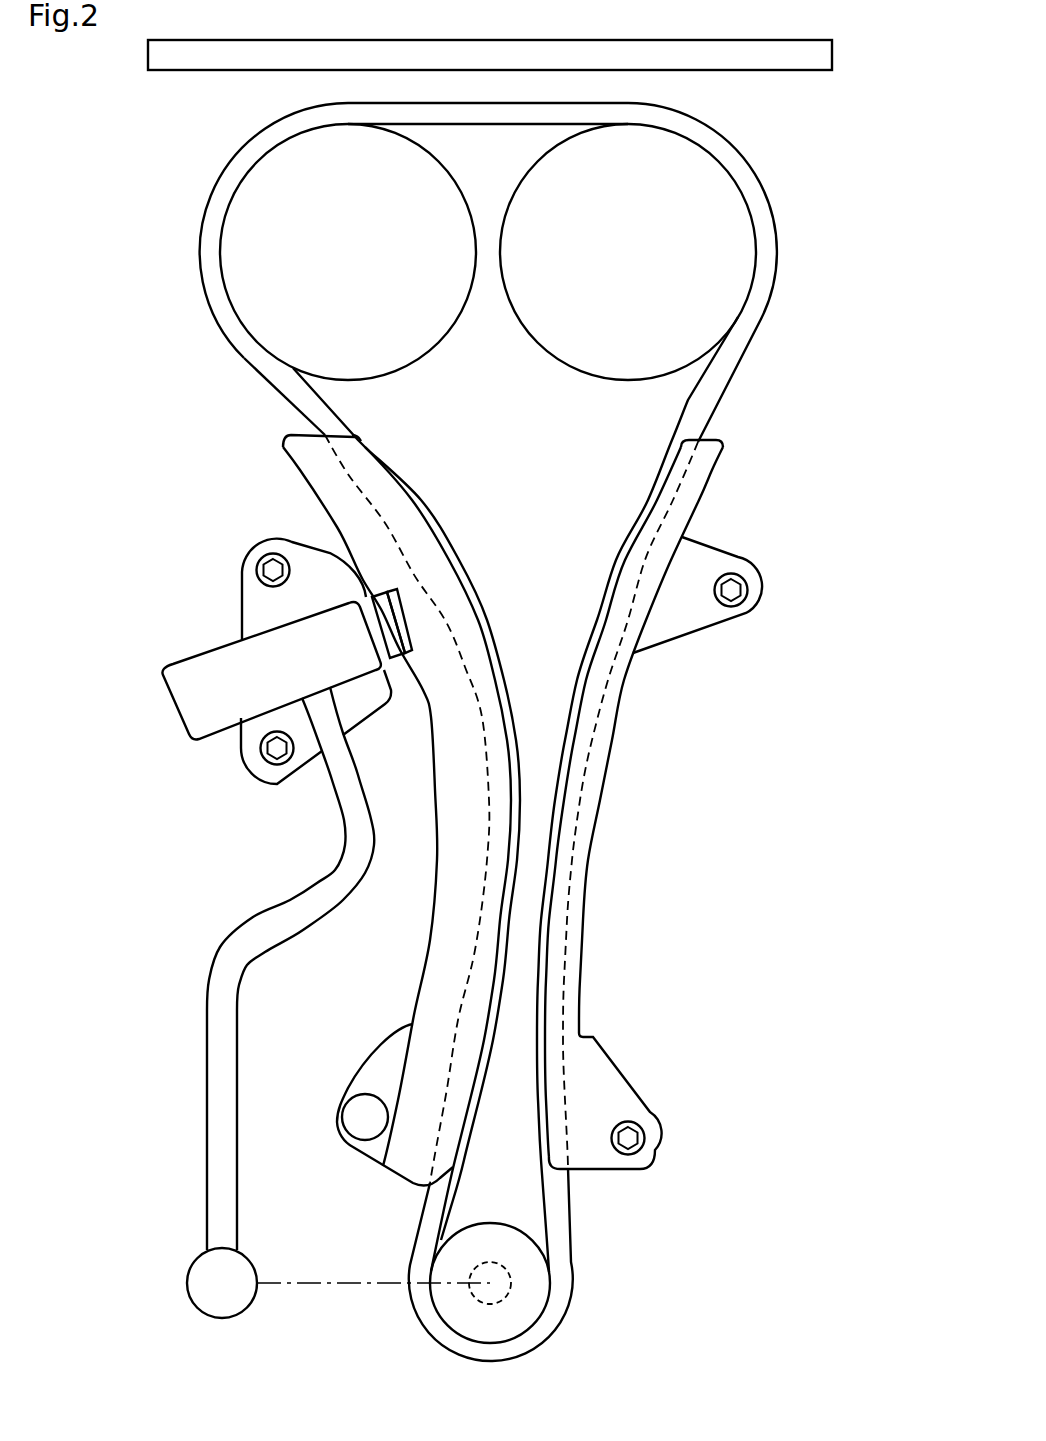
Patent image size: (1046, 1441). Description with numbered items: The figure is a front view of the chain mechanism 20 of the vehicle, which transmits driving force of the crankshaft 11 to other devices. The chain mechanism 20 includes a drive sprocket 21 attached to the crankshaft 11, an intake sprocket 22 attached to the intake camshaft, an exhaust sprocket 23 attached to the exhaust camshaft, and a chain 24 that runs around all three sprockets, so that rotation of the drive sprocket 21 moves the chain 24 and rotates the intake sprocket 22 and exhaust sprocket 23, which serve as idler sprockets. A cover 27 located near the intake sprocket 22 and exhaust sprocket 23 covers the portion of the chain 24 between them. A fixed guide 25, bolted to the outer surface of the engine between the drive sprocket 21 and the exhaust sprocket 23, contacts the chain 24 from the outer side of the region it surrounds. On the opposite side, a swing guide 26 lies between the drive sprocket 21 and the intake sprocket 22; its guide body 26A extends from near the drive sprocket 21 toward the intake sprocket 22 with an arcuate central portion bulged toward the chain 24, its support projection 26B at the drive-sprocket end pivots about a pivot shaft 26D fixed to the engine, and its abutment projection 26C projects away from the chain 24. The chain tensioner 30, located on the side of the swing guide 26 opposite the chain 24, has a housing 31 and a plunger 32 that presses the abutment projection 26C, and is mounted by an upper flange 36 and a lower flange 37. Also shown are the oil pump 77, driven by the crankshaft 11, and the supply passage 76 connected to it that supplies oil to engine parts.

The crankshaft 11 is at (498, 1262).
The chain mechanism 20 is at (151, 142).
The drive sprocket 21 is at (537, 1287).
The intake sprocket 22 is at (434, 352).
The exhaust sprocket 23 is at (538, 350).
The chain 24 is at (780, 253).
The fixed guide 25 is at (723, 440).
The swing guide 26 is at (365, 820).
The guide body 26A is at (287, 463).
The support projection 26B is at (333, 1113).
The abutment projection 26C is at (403, 658).
The pivot shaft 26D is at (355, 1130).
The cover 27 is at (834, 55).
The chain tensioner 30 is at (131, 571).
The housing 31 is at (176, 661).
The plunger 32 is at (365, 594).
The upper flange 36 is at (240, 583).
The lower flange 37 is at (239, 750).
The supply passage 76 is at (207, 1075).
The oil pump 77 is at (187, 1279).